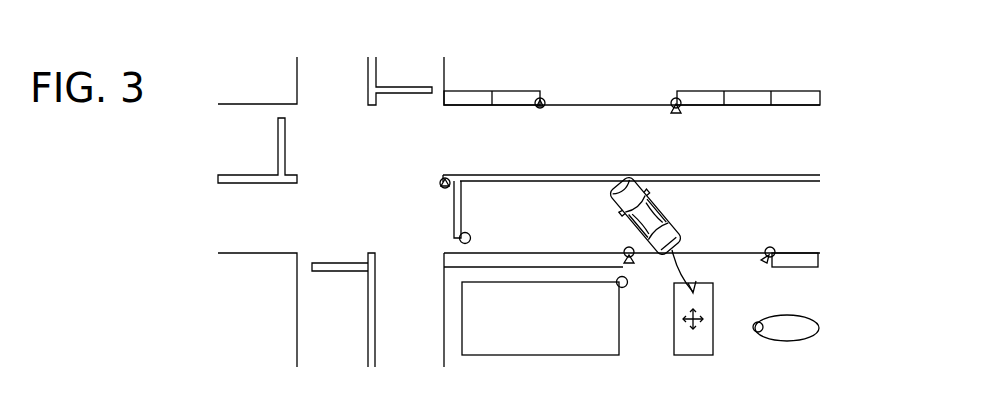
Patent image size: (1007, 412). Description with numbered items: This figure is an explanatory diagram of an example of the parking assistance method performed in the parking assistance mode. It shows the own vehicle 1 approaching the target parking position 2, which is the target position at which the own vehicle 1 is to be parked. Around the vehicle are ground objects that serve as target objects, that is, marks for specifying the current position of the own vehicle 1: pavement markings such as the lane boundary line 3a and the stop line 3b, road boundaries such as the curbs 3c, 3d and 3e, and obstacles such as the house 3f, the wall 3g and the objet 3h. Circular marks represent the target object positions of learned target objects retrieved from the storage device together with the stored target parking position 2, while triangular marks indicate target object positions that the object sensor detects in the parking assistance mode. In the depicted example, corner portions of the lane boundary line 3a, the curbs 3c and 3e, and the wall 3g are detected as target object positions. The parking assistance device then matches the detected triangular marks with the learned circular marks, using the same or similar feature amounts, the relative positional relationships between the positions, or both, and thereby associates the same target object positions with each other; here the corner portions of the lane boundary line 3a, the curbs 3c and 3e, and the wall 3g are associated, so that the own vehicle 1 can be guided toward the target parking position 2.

The own vehicle 1 is at (660, 198).
The target parking position 2 is at (705, 319).
The lane boundary line 3a is at (565, 175).
The stop line 3b is at (462, 205).
The curb 3c is at (700, 91).
The curb 3d is at (517, 91).
The curb 3e is at (792, 253).
The house 3f is at (619, 318).
The wall 3g is at (563, 253).
The objet 3h is at (797, 313).